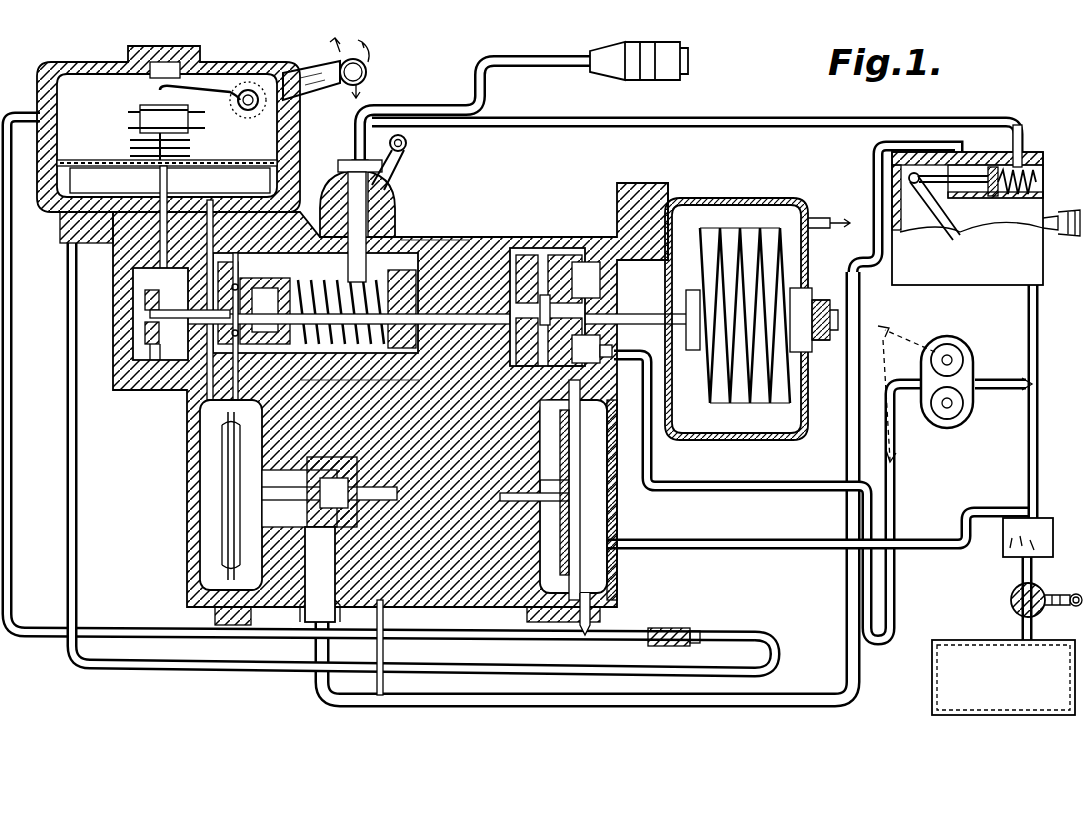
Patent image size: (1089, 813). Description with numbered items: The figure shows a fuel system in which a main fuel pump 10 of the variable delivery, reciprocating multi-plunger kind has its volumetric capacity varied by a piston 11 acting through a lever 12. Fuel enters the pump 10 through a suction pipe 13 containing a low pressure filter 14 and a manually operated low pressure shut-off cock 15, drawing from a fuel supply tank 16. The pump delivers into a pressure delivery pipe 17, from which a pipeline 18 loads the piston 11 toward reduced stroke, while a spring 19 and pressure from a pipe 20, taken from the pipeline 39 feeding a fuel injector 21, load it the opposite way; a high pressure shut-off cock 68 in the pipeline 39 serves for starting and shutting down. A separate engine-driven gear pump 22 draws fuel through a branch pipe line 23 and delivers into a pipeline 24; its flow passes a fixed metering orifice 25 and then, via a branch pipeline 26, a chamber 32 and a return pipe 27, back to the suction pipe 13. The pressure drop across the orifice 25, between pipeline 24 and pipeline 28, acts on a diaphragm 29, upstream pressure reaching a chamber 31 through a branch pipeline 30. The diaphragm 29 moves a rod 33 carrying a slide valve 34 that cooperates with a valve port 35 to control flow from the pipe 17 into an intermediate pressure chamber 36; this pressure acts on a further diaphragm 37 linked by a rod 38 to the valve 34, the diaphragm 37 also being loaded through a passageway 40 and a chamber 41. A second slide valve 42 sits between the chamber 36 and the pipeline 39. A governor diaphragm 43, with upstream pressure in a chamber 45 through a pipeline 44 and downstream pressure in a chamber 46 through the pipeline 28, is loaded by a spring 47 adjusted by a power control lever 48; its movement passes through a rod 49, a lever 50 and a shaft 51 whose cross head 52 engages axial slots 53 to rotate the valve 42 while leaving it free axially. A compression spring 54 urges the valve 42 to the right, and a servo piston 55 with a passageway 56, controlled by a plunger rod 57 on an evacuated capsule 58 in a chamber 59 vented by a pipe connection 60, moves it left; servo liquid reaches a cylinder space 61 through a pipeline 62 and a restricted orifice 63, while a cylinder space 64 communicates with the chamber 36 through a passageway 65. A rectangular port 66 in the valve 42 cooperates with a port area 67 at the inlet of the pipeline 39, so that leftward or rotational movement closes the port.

The main fuel pump 10 is at (1030, 238).
The piston 11 is at (1005, 152).
The lever 12 is at (940, 228).
The suction pipe 13 is at (1027, 442).
The low pressure filter 14 is at (1003, 540).
The low pressure shut-off cock 15 is at (1010, 600).
The fuel supply tank 16 is at (955, 642).
The pressure delivery pipe 17 is at (848, 590).
The pipeline 18 is at (872, 146).
The spring 19 is at (1040, 182).
The pipe 20 is at (746, 122).
The fuel injector 21 is at (680, 66).
The gear pump 22 is at (930, 360).
The branch pipe line 23 is at (1005, 380).
The pipeline 24 is at (923, 404).
The metering orifice 25 is at (675, 630).
The branch pipeline 26 is at (598, 612).
The return pipe 27 is at (958, 534).
The pipeline 28 is at (42, 246).
The diaphragm 29 is at (580, 548).
The branch pipeline 30 is at (540, 603).
The chamber 31 is at (575, 515).
The chamber 32 is at (590, 500).
The rod 33 is at (552, 492).
The slide valve 34 is at (330, 560).
The valve port 35 is at (329, 498).
The intermediate pressure chamber 36 is at (240, 478).
The diaphragm 37 is at (238, 505).
The rod 38 is at (240, 528).
The pipeline 39 is at (432, 116).
The passageway 40 is at (190, 390).
The chamber 41 is at (230, 452).
The slide valve 42 is at (455, 236).
The diaphragm 43 is at (120, 162).
The pipeline 44 is at (66, 466).
The chamber 45 is at (220, 182).
The chamber 46 is at (70, 82).
The spring 47 is at (130, 125).
The power control lever 48 is at (300, 90).
The rod 49 is at (150, 292).
The lever 50 is at (148, 335).
The shaft 51 is at (150, 312).
The cross head 52 is at (296, 362).
The axial slots 53 is at (350, 240).
The compression spring 54 is at (320, 355).
The piston 55 is at (548, 255).
The passageway 56 is at (530, 250).
The plunger rod 57 is at (640, 230).
The evacuated capsule 58 is at (718, 230).
The chamber 59 is at (790, 432).
The pipe connection 60 is at (840, 212).
The cylinder space 61 is at (588, 280).
The pipeline 62 is at (760, 488).
The restricted orifice 63 is at (592, 340).
The cylinder space 64 is at (554, 440).
The passageway 65 is at (395, 385).
The port 66 is at (420, 236).
The port area 67 is at (385, 232).
The high pressure shut-off cock 68 is at (340, 190).